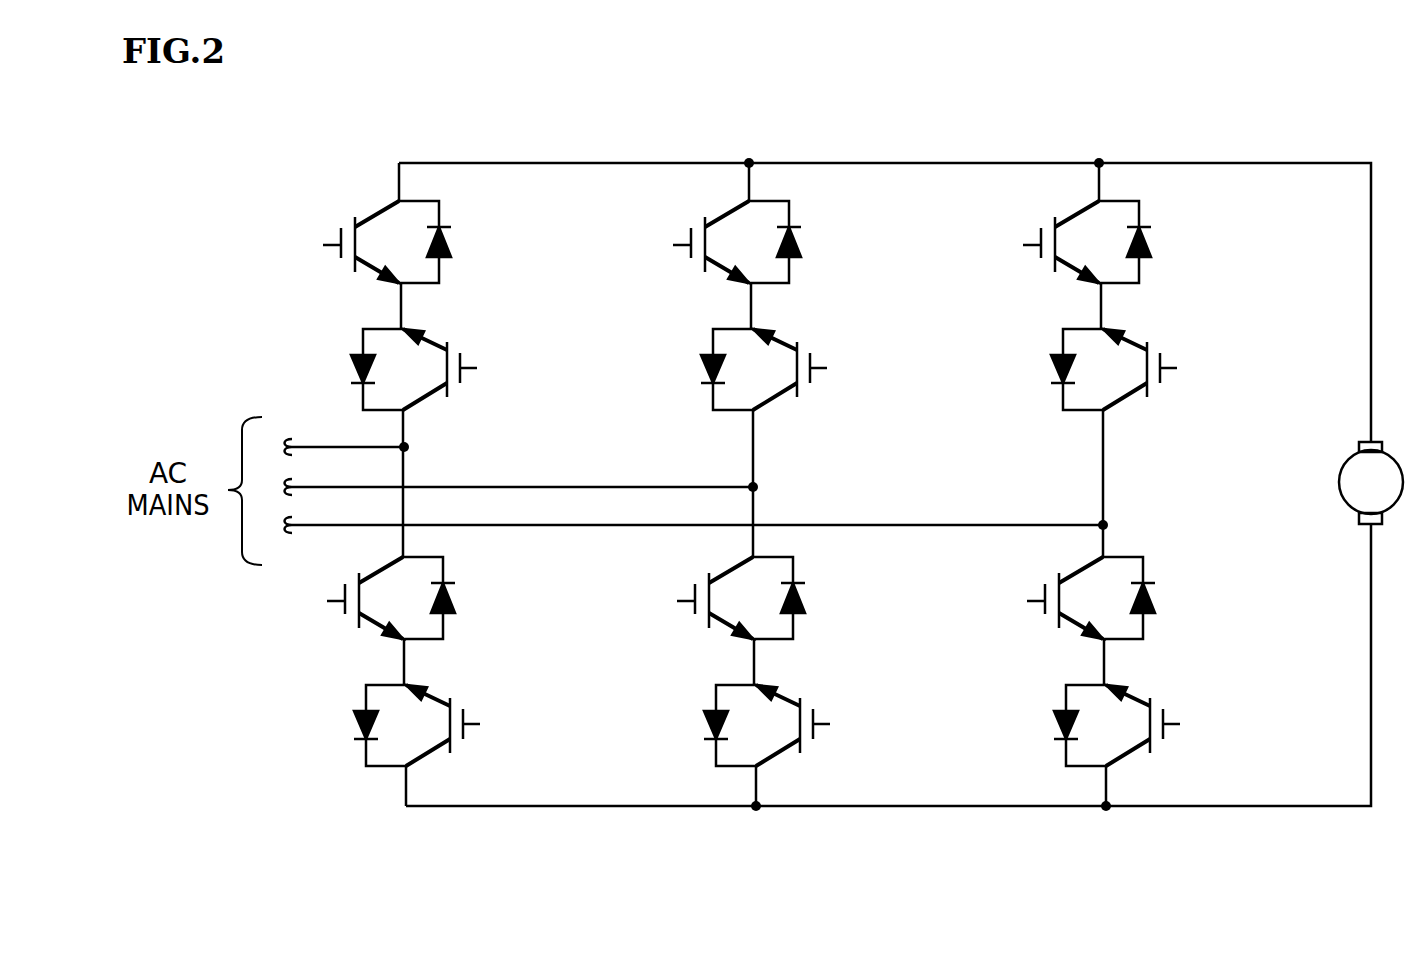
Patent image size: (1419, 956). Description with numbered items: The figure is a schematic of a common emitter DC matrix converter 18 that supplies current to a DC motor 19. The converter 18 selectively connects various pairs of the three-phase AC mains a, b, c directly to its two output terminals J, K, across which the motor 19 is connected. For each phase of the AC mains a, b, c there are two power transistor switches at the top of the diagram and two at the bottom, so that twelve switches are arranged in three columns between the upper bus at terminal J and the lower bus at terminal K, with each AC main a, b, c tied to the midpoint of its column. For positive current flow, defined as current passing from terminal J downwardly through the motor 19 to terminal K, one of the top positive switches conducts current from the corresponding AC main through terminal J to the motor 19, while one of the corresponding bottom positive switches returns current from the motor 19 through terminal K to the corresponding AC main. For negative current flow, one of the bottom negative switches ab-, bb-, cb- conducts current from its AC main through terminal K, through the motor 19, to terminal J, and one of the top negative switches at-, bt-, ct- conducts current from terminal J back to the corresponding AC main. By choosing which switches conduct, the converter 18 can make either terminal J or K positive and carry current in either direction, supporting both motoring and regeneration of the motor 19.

The DC matrix converter 18 is at (1155, 142).
The DC motor 19 is at (1358, 495).
The output terminal j J is at (885, 285).
The output terminal k K is at (888, 681).
The AC mains phase a is at (331, 444).
The AC mains phase b is at (505, 484).
The AC mains phase c is at (680, 523).
The top negative switch at- is at (307, 270).
The top negative switch bt- is at (667, 270).
The top negative switch ct- is at (1009, 270).
The bottom negative switch ab- is at (313, 627).
The bottom negative switch bb- is at (663, 627).
The bottom negative switch cb- is at (1007, 627).